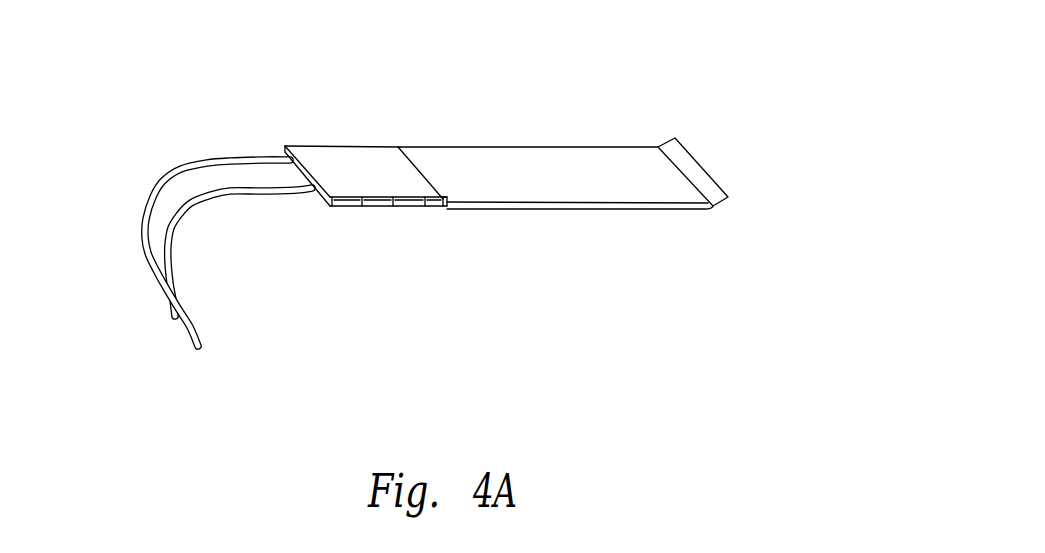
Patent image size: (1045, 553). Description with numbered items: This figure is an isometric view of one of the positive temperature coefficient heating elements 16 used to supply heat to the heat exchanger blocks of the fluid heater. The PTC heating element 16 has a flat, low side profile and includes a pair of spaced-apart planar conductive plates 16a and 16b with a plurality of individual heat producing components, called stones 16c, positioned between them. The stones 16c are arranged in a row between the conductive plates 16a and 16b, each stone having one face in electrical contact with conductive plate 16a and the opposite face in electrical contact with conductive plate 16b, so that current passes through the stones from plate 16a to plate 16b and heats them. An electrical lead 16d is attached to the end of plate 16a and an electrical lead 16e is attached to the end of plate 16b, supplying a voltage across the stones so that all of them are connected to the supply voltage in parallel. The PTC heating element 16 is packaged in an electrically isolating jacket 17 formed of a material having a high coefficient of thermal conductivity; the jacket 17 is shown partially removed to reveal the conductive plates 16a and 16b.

The PTC heating element 16 is at (303, 103).
The conductive plate 16a is at (368, 183).
The conductive plate 16b is at (325, 198).
The stones 16c is at (442, 206).
The electrical lead 16d is at (163, 290).
The electrical lead 16e is at (185, 298).
The electrically isolating jacket 17 is at (583, 163).